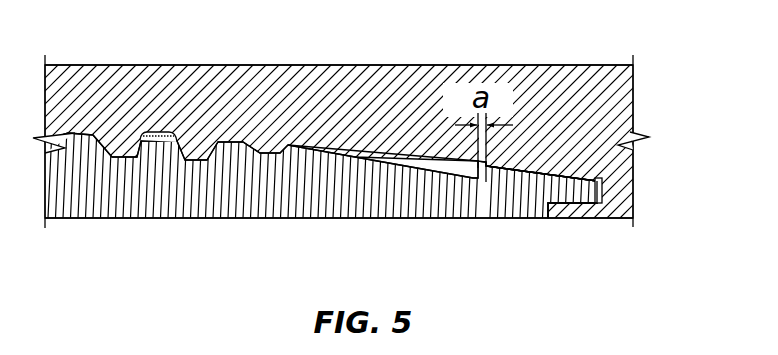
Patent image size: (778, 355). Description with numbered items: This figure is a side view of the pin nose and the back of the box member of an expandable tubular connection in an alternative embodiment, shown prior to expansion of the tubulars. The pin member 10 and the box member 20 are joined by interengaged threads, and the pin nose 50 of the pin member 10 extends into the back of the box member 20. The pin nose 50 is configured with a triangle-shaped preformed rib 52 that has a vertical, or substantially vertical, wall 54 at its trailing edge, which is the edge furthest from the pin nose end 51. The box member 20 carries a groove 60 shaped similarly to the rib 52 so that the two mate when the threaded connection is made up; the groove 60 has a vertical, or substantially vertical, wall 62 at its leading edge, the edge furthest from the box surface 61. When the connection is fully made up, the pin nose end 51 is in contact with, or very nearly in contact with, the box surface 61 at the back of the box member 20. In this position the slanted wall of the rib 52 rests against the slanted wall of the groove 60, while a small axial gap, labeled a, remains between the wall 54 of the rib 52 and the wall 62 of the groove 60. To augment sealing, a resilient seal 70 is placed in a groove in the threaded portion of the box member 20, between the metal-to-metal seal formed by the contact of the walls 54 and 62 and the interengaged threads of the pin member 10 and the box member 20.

The pin member 10 is at (198, 206).
The box member 20 is at (240, 85).
The pin nose 50 is at (572, 200).
The pin nose end 51 is at (595, 201).
The rib 52 is at (522, 171).
The wall 54 is at (482, 174).
The groove 60 is at (521, 166).
The box surface 61 is at (600, 184).
The wall 62 is at (467, 168).
The resilient seal 70 is at (155, 131).